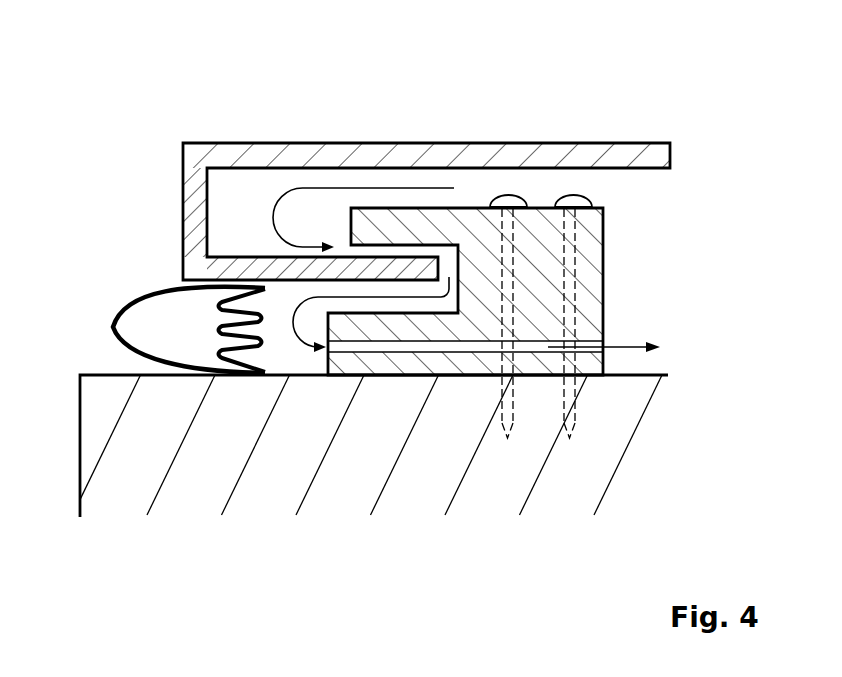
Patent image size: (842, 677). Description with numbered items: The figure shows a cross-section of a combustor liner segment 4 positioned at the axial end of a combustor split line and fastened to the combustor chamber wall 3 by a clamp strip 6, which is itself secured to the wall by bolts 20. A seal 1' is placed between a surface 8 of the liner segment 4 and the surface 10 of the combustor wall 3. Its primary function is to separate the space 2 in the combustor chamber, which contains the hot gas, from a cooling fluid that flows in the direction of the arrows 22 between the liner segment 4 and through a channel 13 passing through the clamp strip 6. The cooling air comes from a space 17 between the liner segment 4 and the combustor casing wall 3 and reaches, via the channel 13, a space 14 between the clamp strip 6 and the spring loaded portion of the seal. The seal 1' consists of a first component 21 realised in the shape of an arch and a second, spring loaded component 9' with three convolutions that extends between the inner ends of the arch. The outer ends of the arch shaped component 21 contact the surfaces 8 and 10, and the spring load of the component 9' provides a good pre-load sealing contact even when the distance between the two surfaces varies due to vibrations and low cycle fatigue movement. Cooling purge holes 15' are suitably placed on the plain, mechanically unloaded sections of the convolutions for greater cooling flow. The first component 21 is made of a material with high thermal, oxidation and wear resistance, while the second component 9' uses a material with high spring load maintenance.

The seal 1' is at (143, 148).
The space in the combustor chamber 2 is at (42, 158).
The combustor chamber wall 3 is at (332, 452).
The liner segment 4 is at (455, 156).
The clamp strip 6 is at (535, 290).
The surface of the liner segment 8 is at (388, 292).
The spring loaded component 9' is at (302, 490).
The surface of the combustor wall 10 is at (150, 377).
The channel 13 is at (418, 352).
The space 14 is at (308, 322).
The cooling purge holes 15' is at (242, 461).
The space 17 is at (634, 262).
The bolts 20 is at (569, 193).
The first component 21 is at (152, 460).
The arrows 22 is at (282, 197).